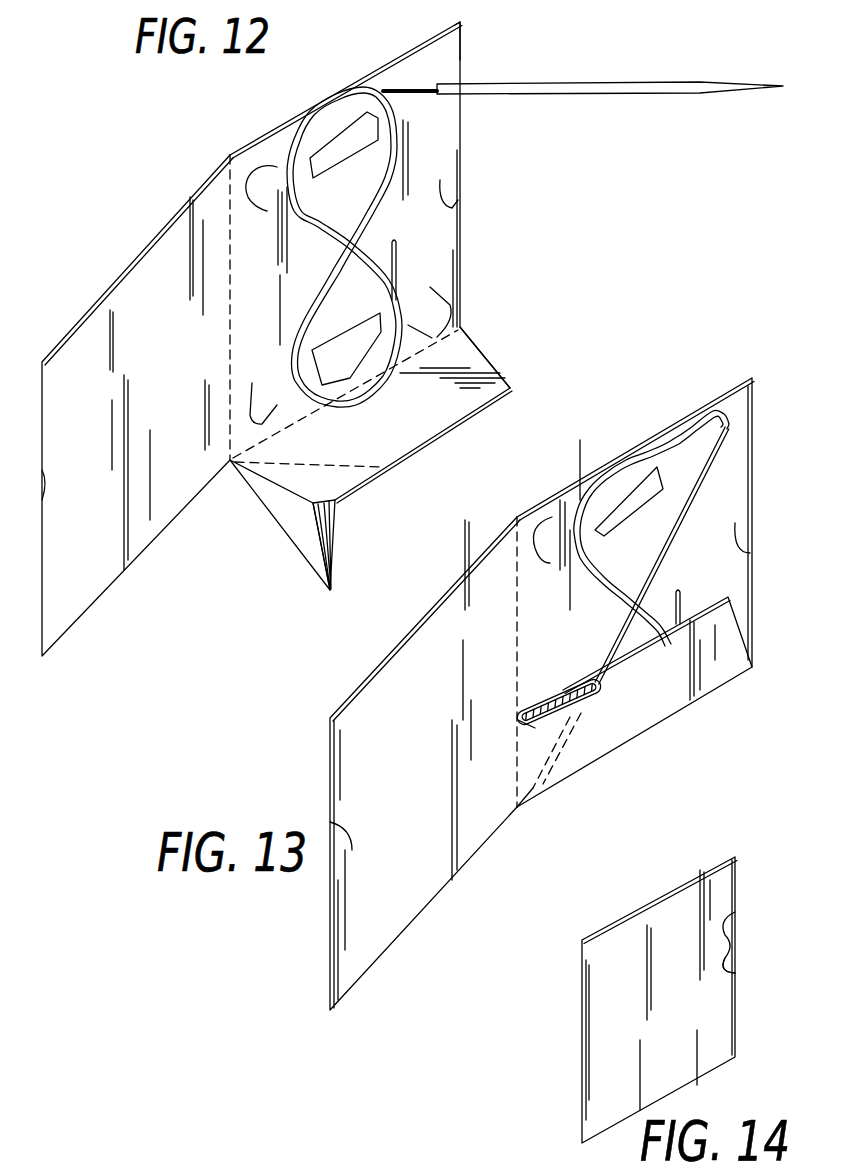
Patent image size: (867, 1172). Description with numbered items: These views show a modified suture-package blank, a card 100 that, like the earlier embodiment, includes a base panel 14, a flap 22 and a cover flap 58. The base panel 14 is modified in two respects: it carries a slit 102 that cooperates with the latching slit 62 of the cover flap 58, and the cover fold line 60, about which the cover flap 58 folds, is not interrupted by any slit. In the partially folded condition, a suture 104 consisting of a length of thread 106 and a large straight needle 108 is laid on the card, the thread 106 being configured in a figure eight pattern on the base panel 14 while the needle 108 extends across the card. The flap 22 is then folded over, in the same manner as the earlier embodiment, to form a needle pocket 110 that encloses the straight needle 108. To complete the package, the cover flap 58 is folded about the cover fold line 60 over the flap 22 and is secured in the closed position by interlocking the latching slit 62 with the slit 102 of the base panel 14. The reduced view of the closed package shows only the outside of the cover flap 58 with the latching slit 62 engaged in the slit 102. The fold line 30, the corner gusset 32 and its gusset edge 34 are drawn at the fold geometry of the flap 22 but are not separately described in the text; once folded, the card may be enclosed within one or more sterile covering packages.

In FIG. 12, the base panel 14 is at (427, 137).
In FIG. 13, the base panel 14 is at (745, 480).
In FIG. 12, the flap 22 is at (500, 383).
In FIG. 13, the flap 22 is at (728, 657).
In FIG. 12, the fold line 30 is at (317, 467).
In FIG. 12, the corner gusset 32 is at (283, 515).
In FIG. 13, the corner gusset 32 is at (587, 697).
In FIG. 12, the gusset edge 34 is at (333, 530).
In FIG. 13, the gusset edge 34 is at (522, 715).
In FIG. 12, the cover flap 58 is at (143, 270).
In FIG. 13, the cover flap 58 is at (413, 653).
In FIG. 14, the cover flap 58 is at (660, 923).
In FIG. 12, the cover fold line 60 is at (230, 350).
In FIG. 12, the latching slit 62 is at (67, 500).
In FIG. 13, the latching slit 62 is at (352, 838).
In FIG. 14, the latching slit 62 is at (728, 917).
In FIG. 12, the card 100 is at (460, 50).
In FIG. 12, the slit 102 is at (453, 200).
In FIG. 13, the slit 102 is at (747, 545).
In FIG. 14, the slit 102 is at (733, 975).
In FIG. 12, the suture 104 is at (387, 95).
In FIG. 13, the suture 104 is at (672, 440).
In FIG. 12, the thread 106 is at (310, 132).
In FIG. 13, the thread 106 is at (592, 497).
In FIG. 12, the straight needle 108 is at (647, 57).
In FIG. 13, the straight needle 108 is at (653, 560).
In FIG. 13, the needle pocket 110 is at (557, 705).